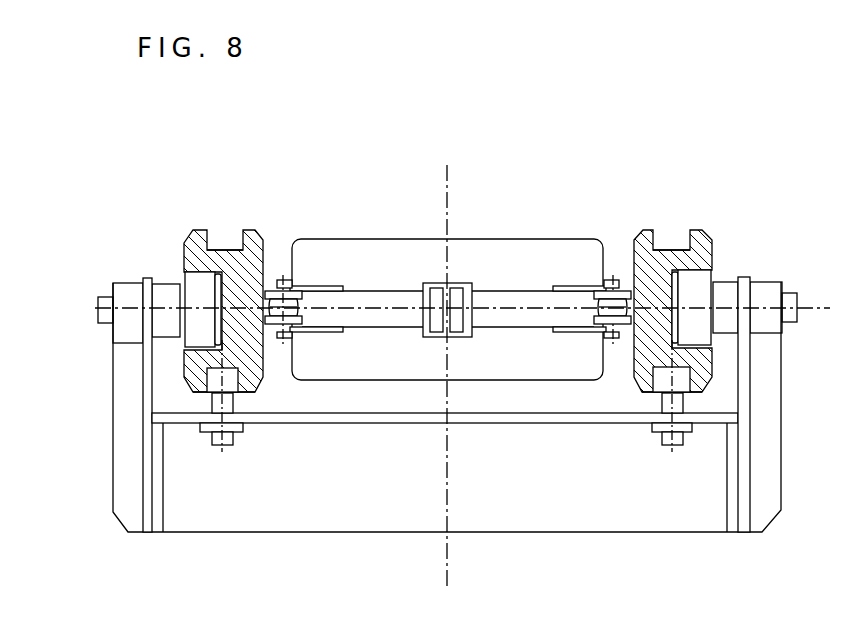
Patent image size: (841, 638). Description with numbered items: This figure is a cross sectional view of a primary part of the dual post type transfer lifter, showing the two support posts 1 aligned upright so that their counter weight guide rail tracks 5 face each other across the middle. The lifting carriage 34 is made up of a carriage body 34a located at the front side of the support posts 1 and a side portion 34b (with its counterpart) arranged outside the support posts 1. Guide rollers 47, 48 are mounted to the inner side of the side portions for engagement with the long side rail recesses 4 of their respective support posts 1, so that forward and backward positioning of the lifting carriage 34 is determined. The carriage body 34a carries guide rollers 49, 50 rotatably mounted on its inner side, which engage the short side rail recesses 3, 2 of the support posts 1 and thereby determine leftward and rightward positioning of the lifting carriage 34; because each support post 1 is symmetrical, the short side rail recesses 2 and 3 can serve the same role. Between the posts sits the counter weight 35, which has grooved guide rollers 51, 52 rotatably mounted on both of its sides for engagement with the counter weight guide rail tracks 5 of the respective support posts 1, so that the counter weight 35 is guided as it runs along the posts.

The support post 1 is at (183, 239).
The short side rail recess 2 is at (670, 240).
The short side rail recess 3 is at (222, 240).
The long side rail recess 4 is at (212, 292).
The counter weight guide rail track 5 is at (304, 284).
The lifting carriage 34 is at (781, 387).
The carriage body 34a is at (143, 398).
The side portion 34b is at (743, 360).
The counter weight 35 is at (515, 258).
The guide roller 47 is at (695, 301).
The guide roller 48 is at (195, 329).
The guide roller 49 is at (677, 381).
The guide roller 50 is at (228, 382).
The grooved guide roller 51 is at (603, 285).
The grooved guide roller 52 is at (298, 306).